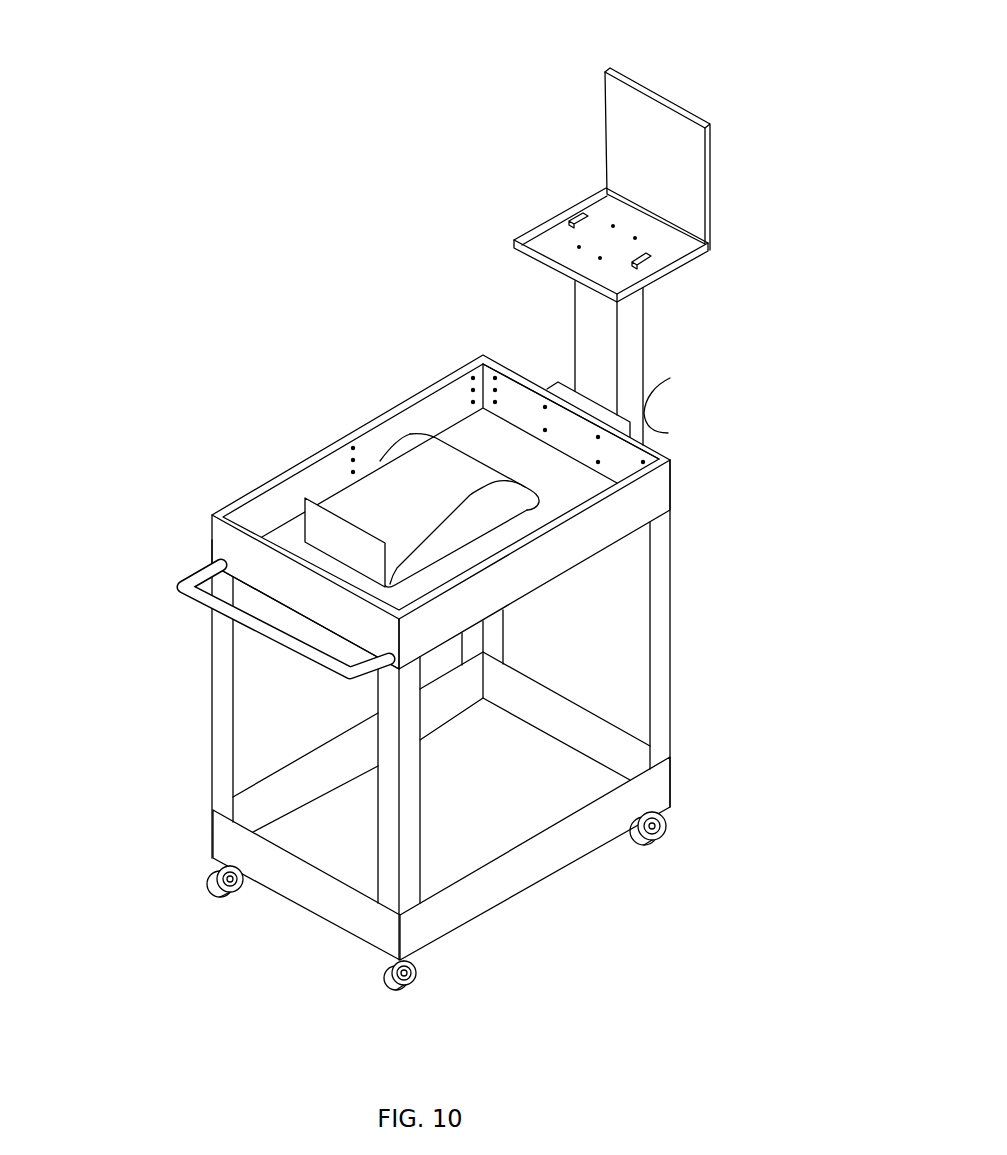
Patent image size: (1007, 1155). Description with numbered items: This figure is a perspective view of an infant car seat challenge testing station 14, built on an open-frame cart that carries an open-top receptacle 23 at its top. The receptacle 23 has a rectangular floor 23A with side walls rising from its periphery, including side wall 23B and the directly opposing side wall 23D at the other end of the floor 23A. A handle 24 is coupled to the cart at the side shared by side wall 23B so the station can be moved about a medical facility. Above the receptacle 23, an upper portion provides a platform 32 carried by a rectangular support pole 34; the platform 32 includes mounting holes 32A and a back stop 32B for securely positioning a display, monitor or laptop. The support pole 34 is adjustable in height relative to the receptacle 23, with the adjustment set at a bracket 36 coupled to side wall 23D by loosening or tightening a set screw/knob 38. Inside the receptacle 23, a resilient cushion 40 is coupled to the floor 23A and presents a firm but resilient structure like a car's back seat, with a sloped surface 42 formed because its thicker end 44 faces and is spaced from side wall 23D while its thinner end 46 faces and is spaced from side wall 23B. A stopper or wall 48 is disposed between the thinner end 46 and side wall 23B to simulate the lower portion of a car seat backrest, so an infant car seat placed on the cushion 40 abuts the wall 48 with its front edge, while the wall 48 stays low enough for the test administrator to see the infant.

The infant car seat challenge testing station 14 is at (222, 294).
The open-top receptacle 23 is at (282, 463).
The floor 23A is at (478, 437).
The side wall 23B is at (232, 544).
The side wall 23D is at (523, 400).
The handle 24 is at (178, 598).
The platform 32 is at (517, 251).
The holes 32A is at (577, 218).
The back stop 32B is at (653, 113).
The support pole 34 is at (636, 332).
The bracket 36 is at (648, 432).
The set screw/knob 38 is at (670, 378).
The resilient cushion 40 is at (394, 422).
The sloped surface 42 is at (362, 502).
The thicker end 44 is at (403, 577).
The thinner end 46 is at (505, 466).
The stopper or wall 48 is at (318, 525).